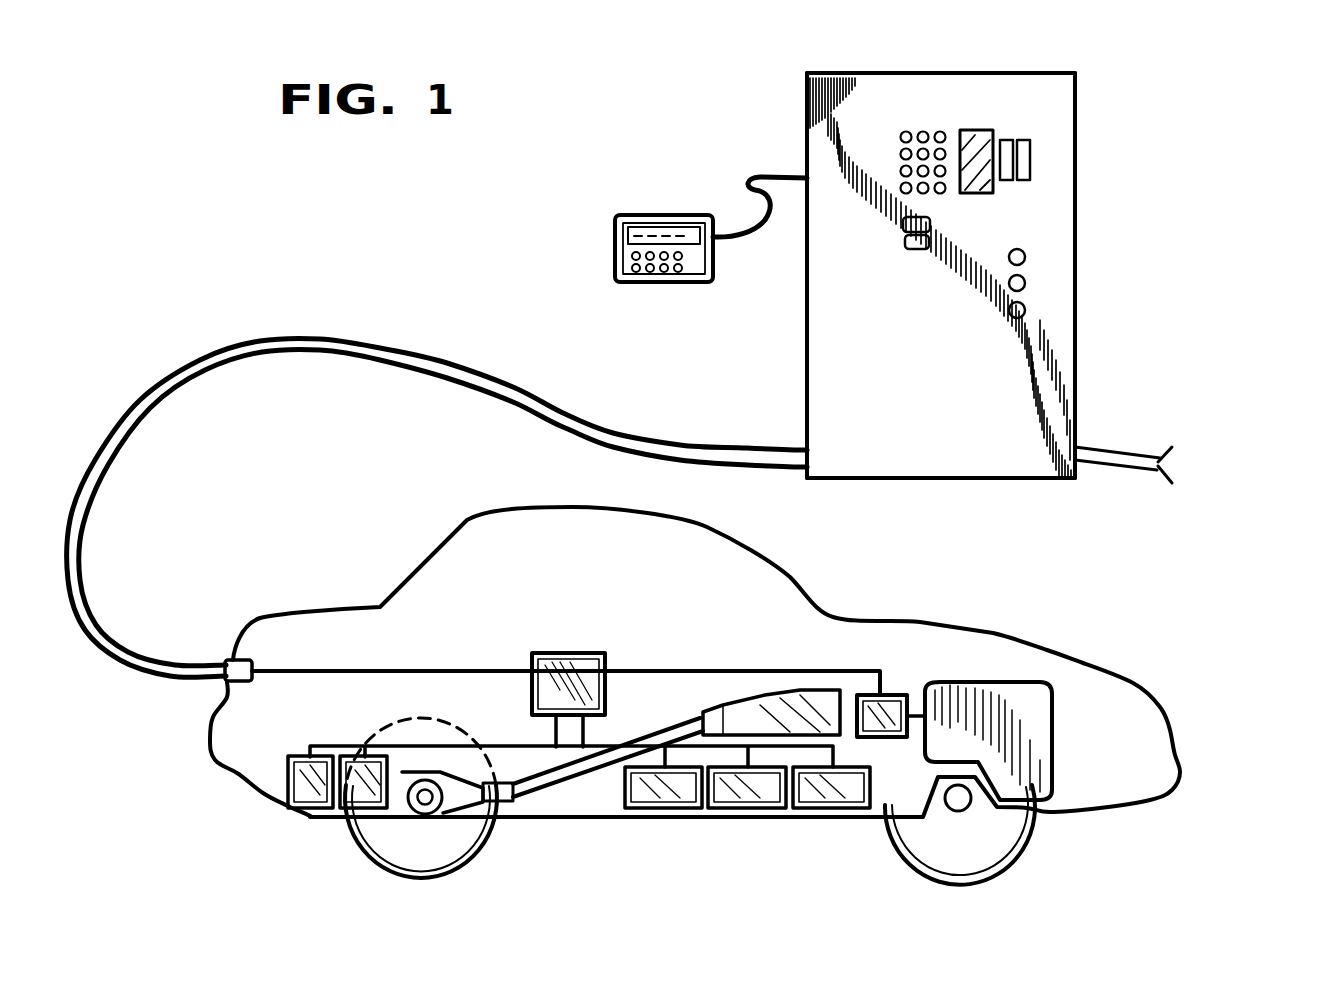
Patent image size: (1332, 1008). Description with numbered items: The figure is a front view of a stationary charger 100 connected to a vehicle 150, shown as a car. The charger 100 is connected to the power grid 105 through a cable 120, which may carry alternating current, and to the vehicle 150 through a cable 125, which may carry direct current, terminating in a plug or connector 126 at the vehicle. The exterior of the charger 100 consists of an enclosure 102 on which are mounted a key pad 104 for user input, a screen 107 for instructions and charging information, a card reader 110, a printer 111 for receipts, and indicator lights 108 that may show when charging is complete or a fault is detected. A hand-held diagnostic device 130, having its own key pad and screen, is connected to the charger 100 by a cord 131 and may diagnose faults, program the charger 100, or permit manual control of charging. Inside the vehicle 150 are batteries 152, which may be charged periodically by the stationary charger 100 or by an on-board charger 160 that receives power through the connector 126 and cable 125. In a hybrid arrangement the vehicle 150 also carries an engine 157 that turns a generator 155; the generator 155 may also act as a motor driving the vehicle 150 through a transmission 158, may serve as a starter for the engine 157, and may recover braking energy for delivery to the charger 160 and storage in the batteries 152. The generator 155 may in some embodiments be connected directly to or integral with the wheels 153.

The charger 100 is at (1076, 80).
The enclosure 102 is at (1077, 390).
The key pad 104 is at (907, 128).
The power grid 105 is at (1236, 447).
The screen 107 is at (975, 128).
The indicator lights 108 is at (1025, 310).
The card reader 110 is at (1030, 146).
The printer 111 is at (930, 225).
The cable 120 is at (1127, 472).
The cable 125 is at (214, 373).
The connector 126 is at (236, 657).
The diagnostic device 130 is at (648, 215).
The cord 131 is at (768, 175).
The vehicle 150 is at (428, 560).
The batteries 152 is at (330, 810).
The wheels 153 is at (1033, 820).
The generator 155 is at (890, 694).
The engine 157 is at (1060, 703).
The transmission 158 is at (492, 804).
The on-board charger 160 is at (588, 653).